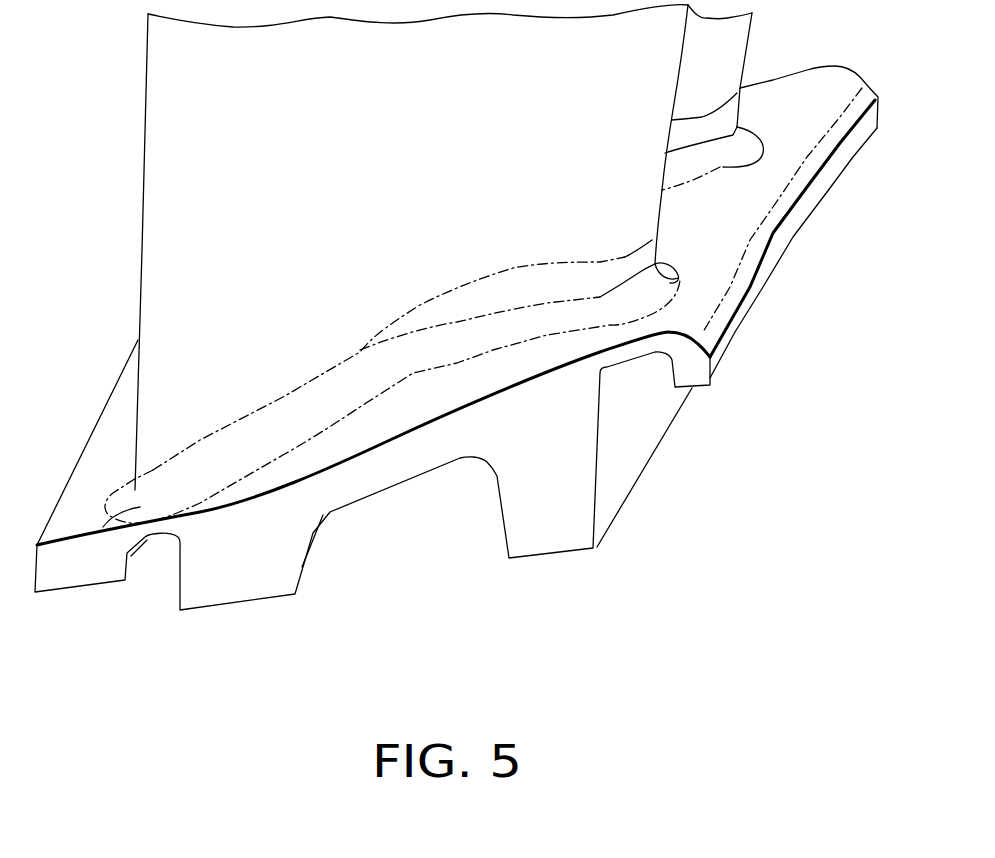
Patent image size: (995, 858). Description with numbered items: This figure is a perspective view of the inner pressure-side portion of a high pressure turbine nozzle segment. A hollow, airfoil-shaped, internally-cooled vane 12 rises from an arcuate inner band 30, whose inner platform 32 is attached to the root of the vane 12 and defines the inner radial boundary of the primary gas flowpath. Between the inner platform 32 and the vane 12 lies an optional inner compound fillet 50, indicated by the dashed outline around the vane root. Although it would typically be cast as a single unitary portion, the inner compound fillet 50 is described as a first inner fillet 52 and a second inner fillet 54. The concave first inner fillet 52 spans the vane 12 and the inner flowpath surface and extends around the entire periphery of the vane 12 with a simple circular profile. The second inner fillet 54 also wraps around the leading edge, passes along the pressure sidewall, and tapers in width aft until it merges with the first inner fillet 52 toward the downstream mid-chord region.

The vane 12 is at (168, 130).
The inner band 30 is at (245, 580).
The inner platform 32 is at (107, 422).
The inner compound fillet 50 is at (266, 397).
The first inner fillet 52 is at (103, 527).
The second inner fillet 54 is at (553, 293).